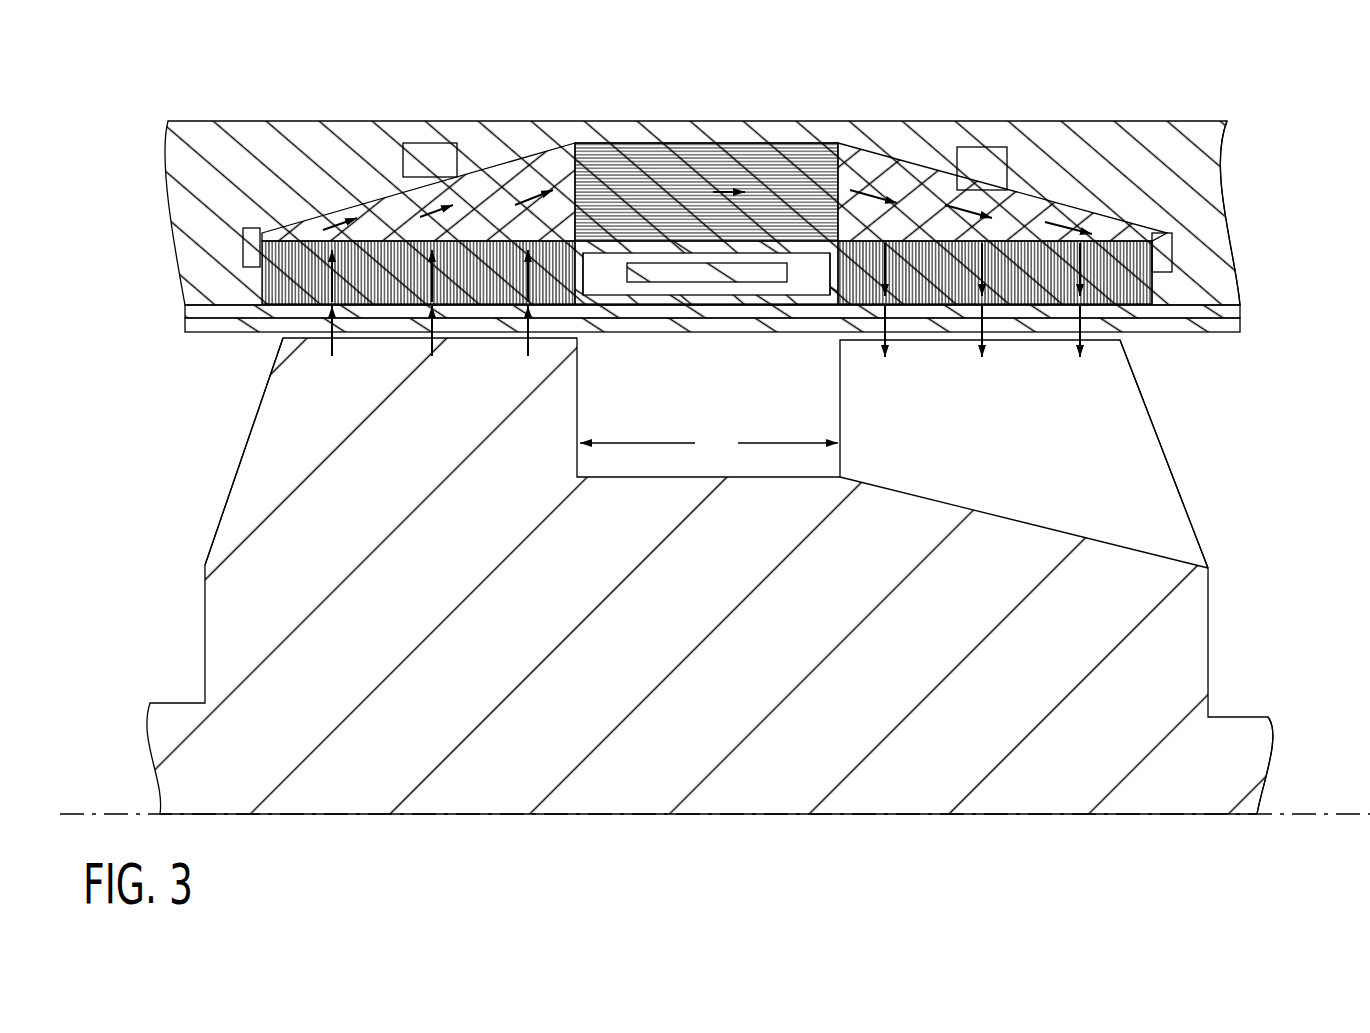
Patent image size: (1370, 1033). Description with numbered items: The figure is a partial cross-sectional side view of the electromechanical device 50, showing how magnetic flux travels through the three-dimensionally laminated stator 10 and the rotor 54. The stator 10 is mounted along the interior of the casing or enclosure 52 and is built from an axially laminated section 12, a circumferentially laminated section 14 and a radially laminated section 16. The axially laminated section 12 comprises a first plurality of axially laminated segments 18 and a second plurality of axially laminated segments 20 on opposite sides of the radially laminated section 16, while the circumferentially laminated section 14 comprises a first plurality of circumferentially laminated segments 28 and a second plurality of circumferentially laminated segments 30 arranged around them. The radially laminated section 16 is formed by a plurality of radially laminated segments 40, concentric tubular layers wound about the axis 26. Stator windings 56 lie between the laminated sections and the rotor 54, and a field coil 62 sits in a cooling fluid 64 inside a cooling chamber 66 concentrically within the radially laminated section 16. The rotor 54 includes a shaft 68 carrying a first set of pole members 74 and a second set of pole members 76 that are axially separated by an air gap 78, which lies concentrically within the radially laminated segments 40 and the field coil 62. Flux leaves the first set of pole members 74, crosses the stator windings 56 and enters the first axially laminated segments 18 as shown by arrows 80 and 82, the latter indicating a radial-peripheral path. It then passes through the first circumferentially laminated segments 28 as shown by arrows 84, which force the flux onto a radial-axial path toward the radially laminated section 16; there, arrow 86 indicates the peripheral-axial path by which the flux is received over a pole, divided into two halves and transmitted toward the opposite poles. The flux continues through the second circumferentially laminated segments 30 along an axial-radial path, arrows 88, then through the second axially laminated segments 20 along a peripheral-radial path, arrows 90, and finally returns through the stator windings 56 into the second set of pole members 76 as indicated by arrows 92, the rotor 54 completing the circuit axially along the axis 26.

The three-dimensionally laminated stator 10 is at (770, 124).
The axially laminated section 12 is at (237, 278).
The circumferentially laminated section 14 is at (313, 192).
The radially laminated section 16 is at (671, 138).
The first plurality of axially laminated segments 18 is at (258, 300).
The second plurality of axially laminated segments 20 is at (1153, 272).
The axis 26 is at (1300, 814).
The first plurality of circumferentially laminated segments 28 is at (366, 200).
The second plurality of circumferentially laminated segments 30 is at (905, 185).
The plurality of radially laminated segments 40 is at (623, 142).
The electromechanical device 50 is at (1248, 75).
The casing or enclosure 52 is at (1215, 160).
The rotor 54 is at (1232, 645).
The stator windings 56 is at (185, 318).
The field coil 62 is at (702, 282).
The cooling fluid 64 is at (606, 287).
The cooling chamber 66 is at (775, 300).
The shaft 68 is at (1255, 742).
The first set of pole members 74 is at (240, 468).
The second set of pole members 76 is at (1167, 452).
The air gap 78 is at (709, 443).
The arrows 80 is at (300, 340).
The arrows 82 is at (330, 282).
The arrows 84 is at (418, 220).
The arrow 86 is at (713, 192).
The arrows 88 is at (881, 188).
The arrows 90 is at (1082, 262).
The arrows 92 is at (1085, 325).